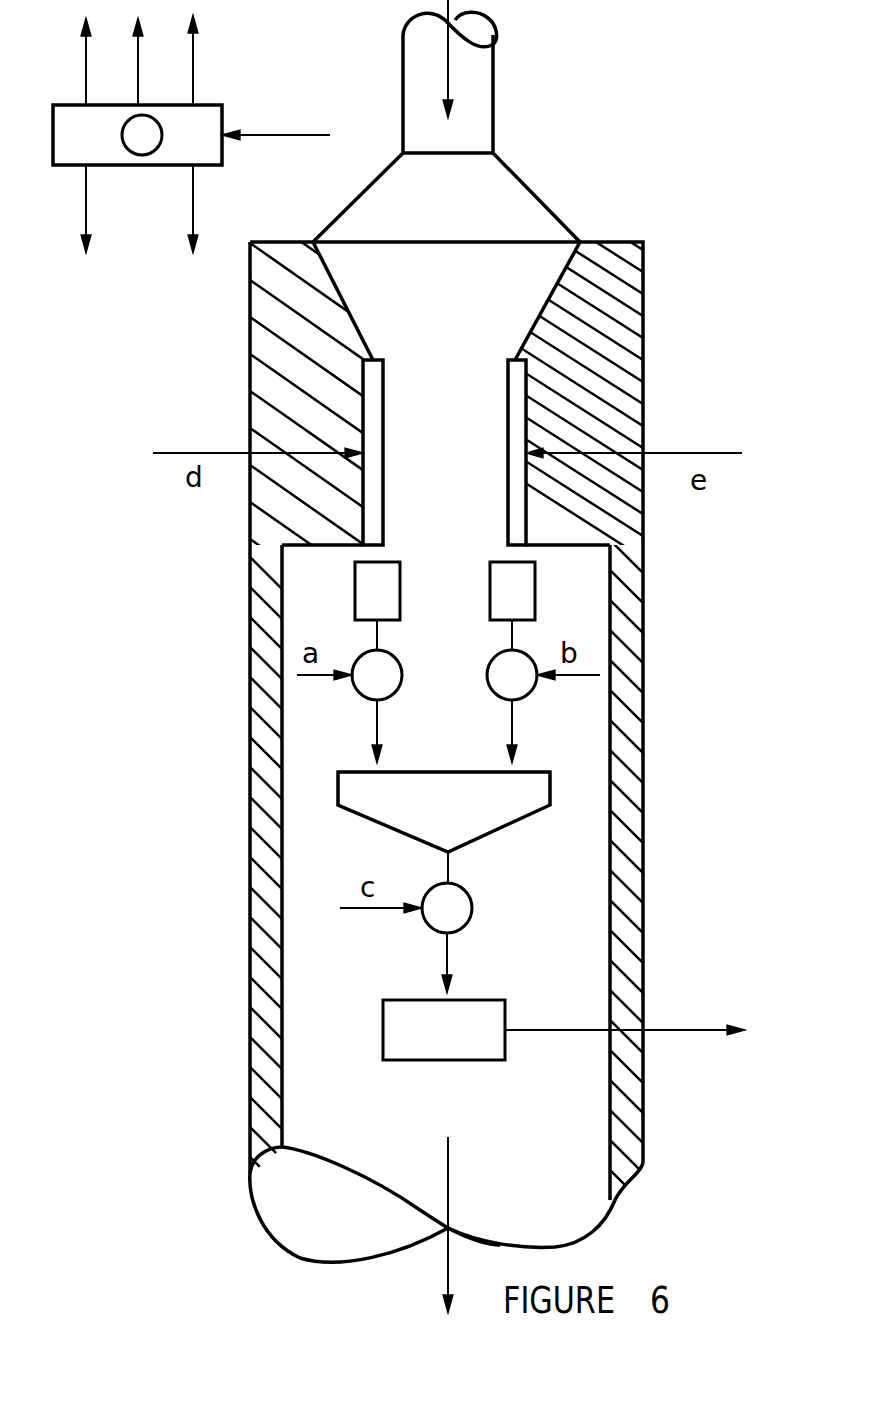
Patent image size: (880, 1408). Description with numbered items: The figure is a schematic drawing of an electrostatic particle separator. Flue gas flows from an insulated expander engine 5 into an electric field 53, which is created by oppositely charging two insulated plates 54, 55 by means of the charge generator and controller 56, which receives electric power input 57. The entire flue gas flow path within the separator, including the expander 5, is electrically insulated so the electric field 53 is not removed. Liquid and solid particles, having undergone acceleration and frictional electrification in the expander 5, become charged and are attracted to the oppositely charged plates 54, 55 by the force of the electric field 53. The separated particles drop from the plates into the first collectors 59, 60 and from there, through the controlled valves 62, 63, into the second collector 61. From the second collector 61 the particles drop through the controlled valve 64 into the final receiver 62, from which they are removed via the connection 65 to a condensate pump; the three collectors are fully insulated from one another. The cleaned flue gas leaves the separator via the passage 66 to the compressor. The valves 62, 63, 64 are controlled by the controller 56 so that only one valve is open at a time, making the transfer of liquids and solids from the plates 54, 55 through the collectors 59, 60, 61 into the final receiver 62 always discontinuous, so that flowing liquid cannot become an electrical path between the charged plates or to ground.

The insulated expander engine 5 is at (478, 190).
The electric field 53 is at (445, 440).
The insulated plate 54 is at (512, 442).
The insulated plate 55 is at (373, 415).
The charge generator and controller 56 is at (190, 135).
The electric power input 57 is at (270, 133).
The first collector 59 is at (380, 595).
The first collector 60 is at (503, 605).
The second collector 61 is at (507, 803).
The controlled valve / final receiver 62 is at (358, 692).
The controlled valve 63 is at (517, 663).
The controlled valve 64 is at (428, 900).
The connection 65 is at (685, 1028).
The passage 66 is at (443, 1197).